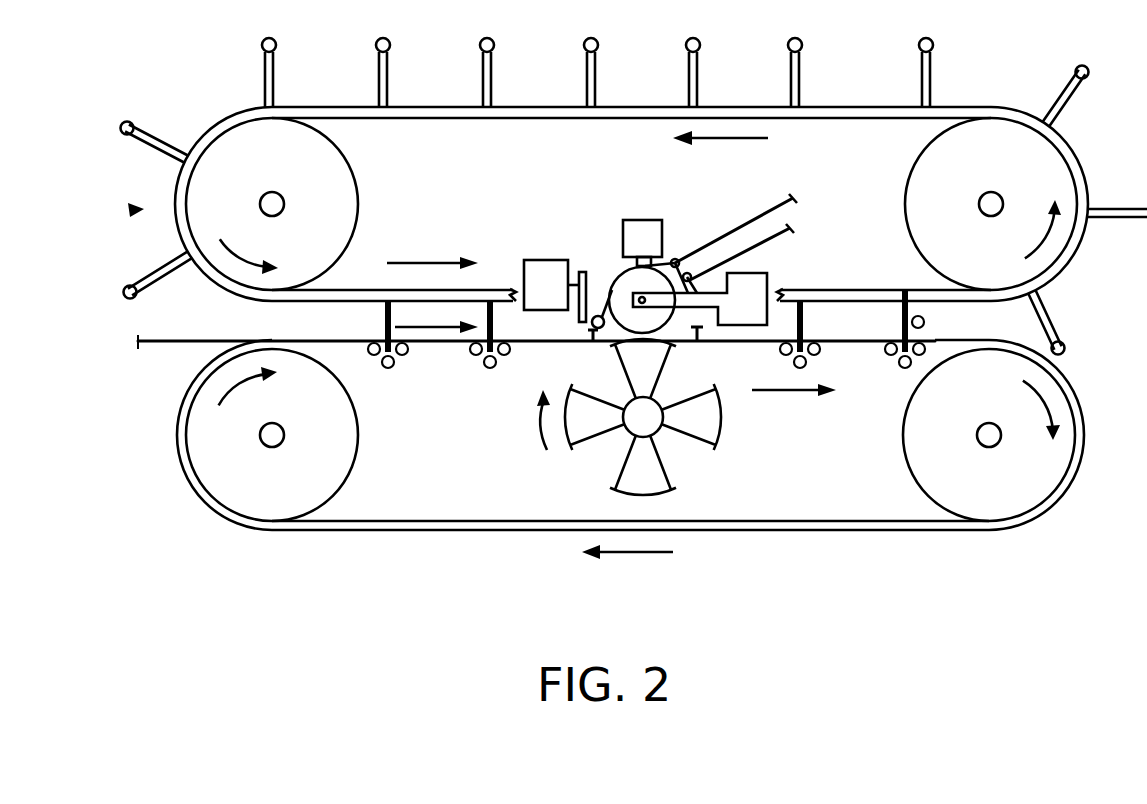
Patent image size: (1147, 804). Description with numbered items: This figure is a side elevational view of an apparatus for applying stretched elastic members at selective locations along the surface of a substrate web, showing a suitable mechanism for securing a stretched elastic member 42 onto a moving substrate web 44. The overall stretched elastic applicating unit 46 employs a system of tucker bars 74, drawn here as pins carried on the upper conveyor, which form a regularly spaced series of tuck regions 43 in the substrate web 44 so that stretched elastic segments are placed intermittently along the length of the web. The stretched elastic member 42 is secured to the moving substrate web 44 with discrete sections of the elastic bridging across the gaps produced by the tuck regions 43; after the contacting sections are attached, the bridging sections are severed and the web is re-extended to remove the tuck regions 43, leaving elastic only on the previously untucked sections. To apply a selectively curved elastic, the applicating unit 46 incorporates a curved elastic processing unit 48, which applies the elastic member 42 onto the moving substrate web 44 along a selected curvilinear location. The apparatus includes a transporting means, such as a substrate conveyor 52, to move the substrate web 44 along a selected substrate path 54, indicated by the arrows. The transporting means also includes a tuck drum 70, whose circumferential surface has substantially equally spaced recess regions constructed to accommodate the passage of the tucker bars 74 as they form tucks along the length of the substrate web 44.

The stretched elastic member 42 is at (594, 316).
The tuck regions 43 is at (497, 368).
The substrate web 44 is at (154, 347).
The stretched elastic applicating unit 46 is at (132, 211).
The curved elastic processing unit 48 is at (633, 243).
The substrate conveyor 52 is at (230, 497).
The substrate path 54 is at (431, 329).
The tuck drum 70 is at (724, 432).
The tucker bars 74 is at (127, 121).